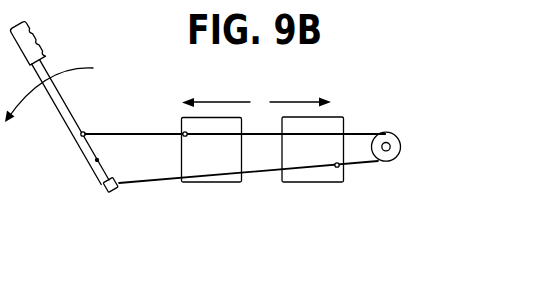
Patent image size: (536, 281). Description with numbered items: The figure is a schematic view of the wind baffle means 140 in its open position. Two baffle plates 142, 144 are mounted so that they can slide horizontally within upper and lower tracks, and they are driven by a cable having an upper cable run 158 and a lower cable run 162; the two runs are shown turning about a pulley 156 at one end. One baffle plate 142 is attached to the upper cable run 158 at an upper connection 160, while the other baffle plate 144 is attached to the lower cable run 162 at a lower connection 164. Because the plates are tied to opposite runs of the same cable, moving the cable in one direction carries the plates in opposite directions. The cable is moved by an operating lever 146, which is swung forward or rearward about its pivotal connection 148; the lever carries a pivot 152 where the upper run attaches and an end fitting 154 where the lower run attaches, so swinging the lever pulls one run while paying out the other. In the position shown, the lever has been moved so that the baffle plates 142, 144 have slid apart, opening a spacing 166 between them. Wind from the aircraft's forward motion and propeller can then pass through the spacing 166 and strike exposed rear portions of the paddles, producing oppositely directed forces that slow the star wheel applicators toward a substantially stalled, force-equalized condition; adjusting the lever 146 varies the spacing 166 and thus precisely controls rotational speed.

The belt 140 is at (108, 128).
The baffle plate 142 is at (220, 183).
The baffle plate 144 is at (315, 179).
The operating lever 146 is at (48, 72).
The pivotal connection 148 is at (95, 161).
The pivot 152 is at (84, 131).
The lever end block 154 is at (106, 191).
The pulley 156 is at (385, 153).
The upper cable run 158 is at (383, 96).
The upper connection 160 is at (185, 131).
The lower cable run 162 is at (261, 173).
The lower connection 164 is at (337, 168).
The spacing 166 is at (259, 132).